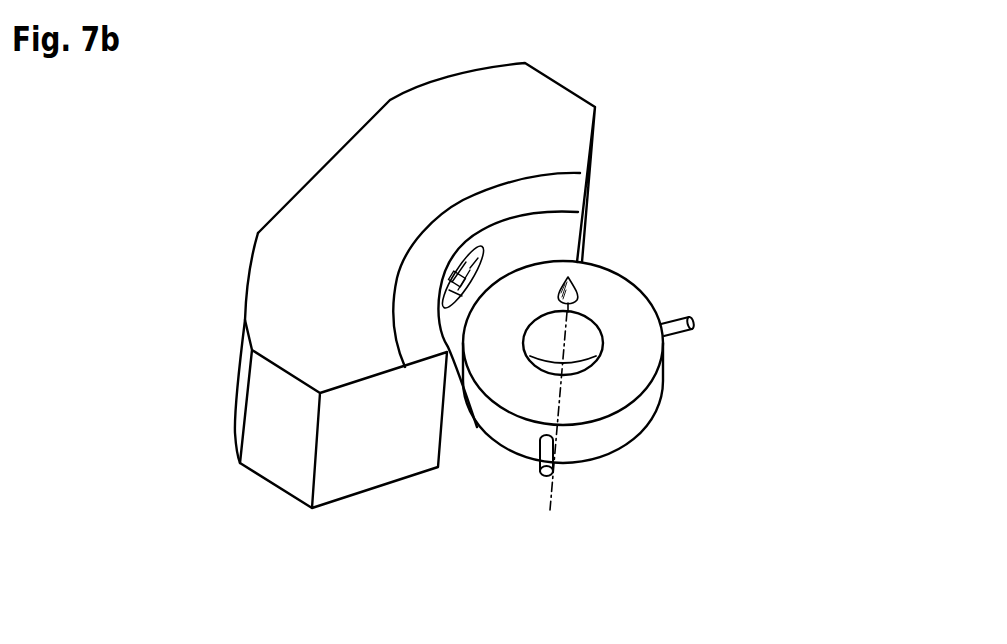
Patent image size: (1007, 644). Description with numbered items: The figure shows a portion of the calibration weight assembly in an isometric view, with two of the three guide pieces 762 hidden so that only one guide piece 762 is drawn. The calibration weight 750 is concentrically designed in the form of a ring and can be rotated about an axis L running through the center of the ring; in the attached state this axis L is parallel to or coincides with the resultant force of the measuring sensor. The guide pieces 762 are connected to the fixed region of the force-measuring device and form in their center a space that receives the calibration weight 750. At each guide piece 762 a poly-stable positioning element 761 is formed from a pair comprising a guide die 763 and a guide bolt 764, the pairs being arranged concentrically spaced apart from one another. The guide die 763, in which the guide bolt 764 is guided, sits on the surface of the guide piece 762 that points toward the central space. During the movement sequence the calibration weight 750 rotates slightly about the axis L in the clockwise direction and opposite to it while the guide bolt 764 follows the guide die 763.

The poly-stable positioning element 761 is at (270, 95).
The guide piece 762 is at (677, 328).
The guide die 763 is at (516, 250).
The calibration weight 750 is at (620, 307).
The guide bolt 764 is at (548, 452).
The axis L is at (565, 330).